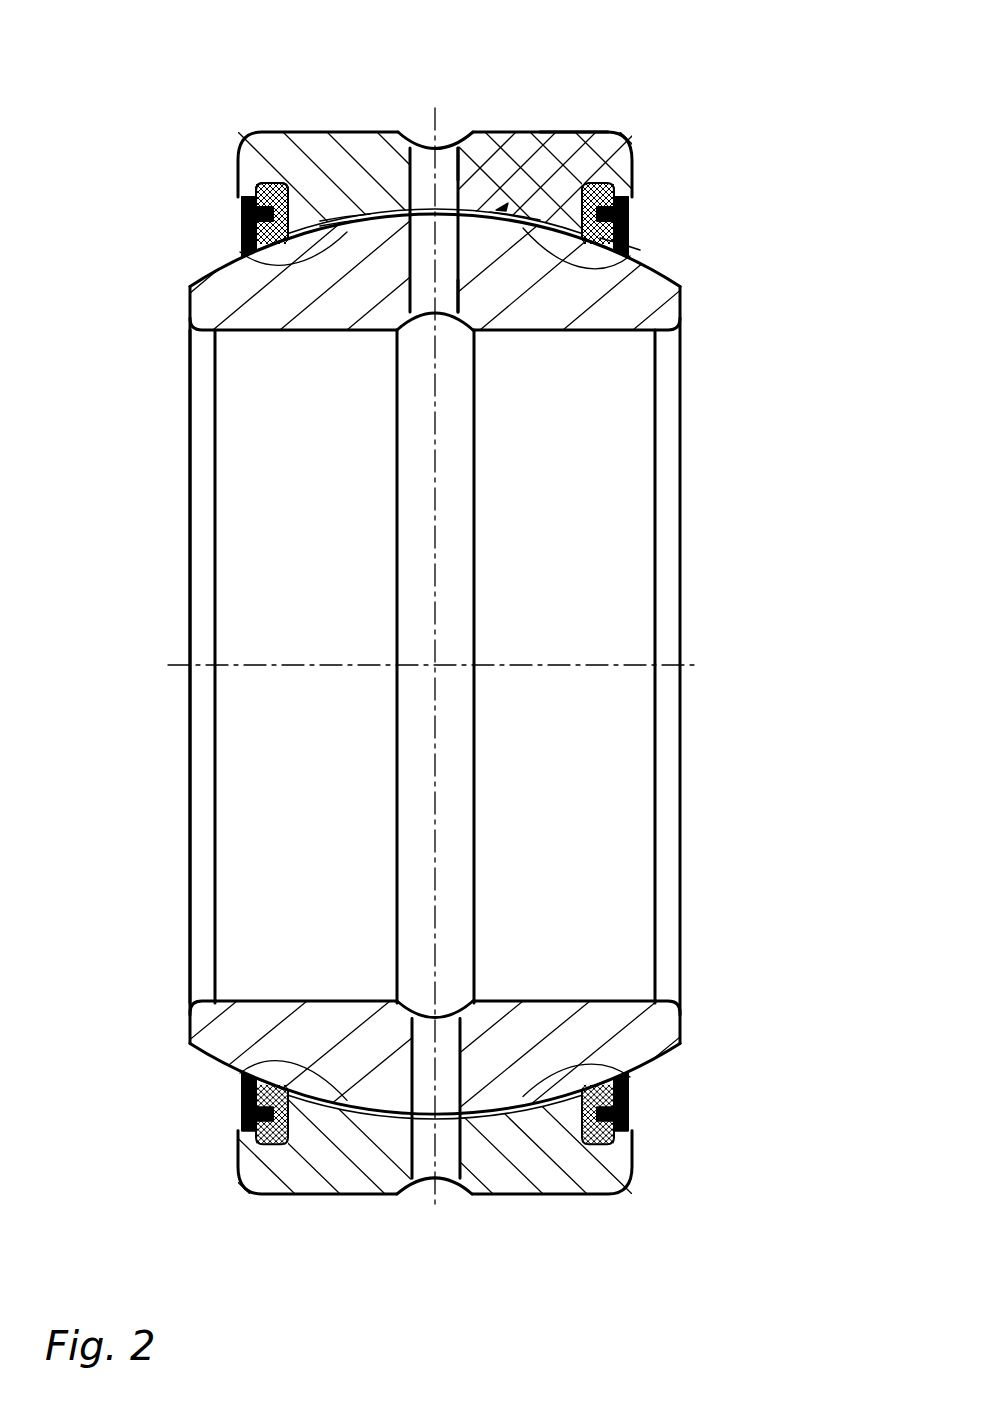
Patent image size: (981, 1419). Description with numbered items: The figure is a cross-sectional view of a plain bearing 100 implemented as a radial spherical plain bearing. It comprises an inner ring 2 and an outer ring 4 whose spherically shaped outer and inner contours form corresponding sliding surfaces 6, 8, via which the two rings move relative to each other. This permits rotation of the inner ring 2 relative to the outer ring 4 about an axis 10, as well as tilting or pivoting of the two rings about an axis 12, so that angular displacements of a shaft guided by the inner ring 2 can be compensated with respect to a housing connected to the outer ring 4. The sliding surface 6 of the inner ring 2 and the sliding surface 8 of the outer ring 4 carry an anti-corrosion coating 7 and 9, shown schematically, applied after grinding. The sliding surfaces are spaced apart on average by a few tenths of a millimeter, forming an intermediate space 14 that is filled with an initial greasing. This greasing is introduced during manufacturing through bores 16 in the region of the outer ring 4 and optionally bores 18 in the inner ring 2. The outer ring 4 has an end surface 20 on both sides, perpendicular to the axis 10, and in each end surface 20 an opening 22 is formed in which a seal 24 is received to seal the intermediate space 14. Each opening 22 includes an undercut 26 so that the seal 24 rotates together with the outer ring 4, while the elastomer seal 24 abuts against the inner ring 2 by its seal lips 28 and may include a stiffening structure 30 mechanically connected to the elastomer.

The plain bearing 100 is at (280, 42).
The inner ring 2 is at (680, 293).
The outer ring 4 is at (633, 180).
The sliding surface 6 is at (637, 260).
The anti-corrosion coating 7 is at (345, 231).
The sliding surface 8 is at (527, 212).
The anti-corrosion coating 9 is at (340, 213).
The axis 10 is at (700, 665).
The axis 12 is at (433, 123).
The intermediate space 14 is at (470, 222).
The bore for initial greasing 16 is at (458, 160).
The bore for initial greasing 18 is at (447, 297).
The end surface 20 is at (172, 170).
The opening 22 is at (664, 185).
The seal 24 is at (633, 217).
The undercut 26 is at (240, 167).
The seal lip 28 is at (237, 248).
The reinforcing element 30 is at (237, 200).